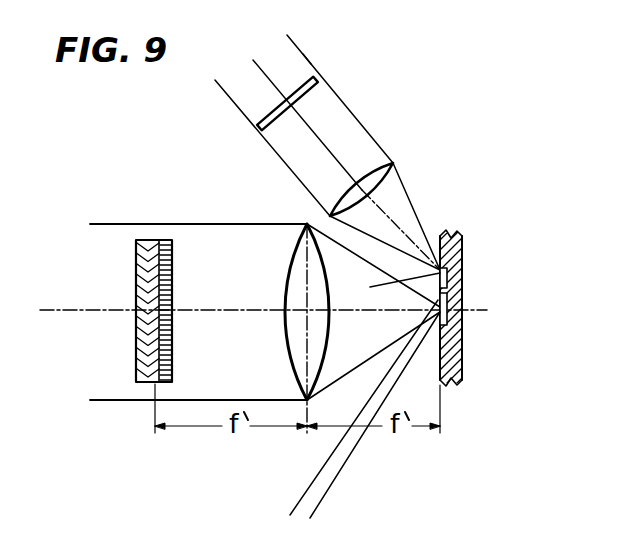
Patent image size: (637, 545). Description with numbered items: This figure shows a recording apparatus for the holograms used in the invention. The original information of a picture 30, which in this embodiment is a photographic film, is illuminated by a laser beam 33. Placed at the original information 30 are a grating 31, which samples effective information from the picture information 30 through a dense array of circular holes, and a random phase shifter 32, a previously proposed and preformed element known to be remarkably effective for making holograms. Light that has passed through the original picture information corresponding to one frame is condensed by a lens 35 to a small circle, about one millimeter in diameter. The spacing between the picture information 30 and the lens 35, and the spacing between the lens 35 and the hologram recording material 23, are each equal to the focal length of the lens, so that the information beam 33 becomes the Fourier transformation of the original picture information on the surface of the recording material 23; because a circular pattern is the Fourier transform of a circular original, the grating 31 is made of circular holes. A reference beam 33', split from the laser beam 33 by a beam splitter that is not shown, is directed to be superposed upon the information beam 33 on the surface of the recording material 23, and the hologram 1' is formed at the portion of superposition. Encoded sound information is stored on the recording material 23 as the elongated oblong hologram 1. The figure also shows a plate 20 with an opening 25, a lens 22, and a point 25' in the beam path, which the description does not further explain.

The elongated oblong hologram 1 is at (473, 269).
The hologram 1' is at (479, 298).
The slit plate 20 is at (318, 78).
The condenser lens 22 is at (396, 164).
The hologram recording material 23 is at (463, 370).
The slit 25 is at (325, 52).
The slit image 25' is at (388, 283).
The original information of a picture 30 is at (150, 384).
The grating 31 is at (166, 240).
The random phase shifter 32 is at (143, 240).
The laser beam 33 is at (265, 243).
The reference beam 33' is at (365, 409).
The objective lens 35 is at (293, 350).